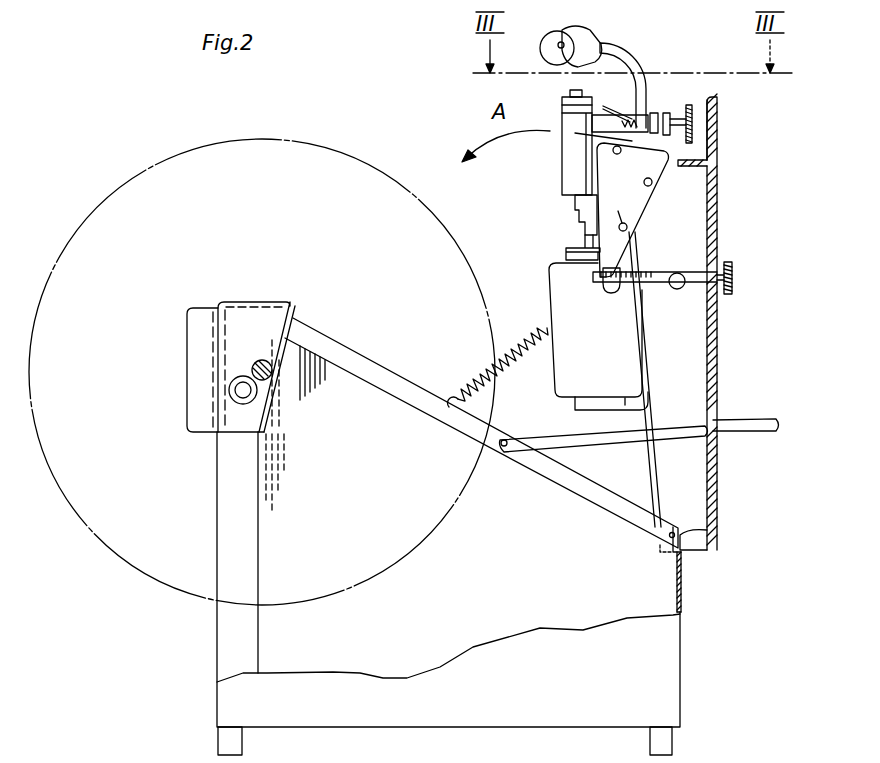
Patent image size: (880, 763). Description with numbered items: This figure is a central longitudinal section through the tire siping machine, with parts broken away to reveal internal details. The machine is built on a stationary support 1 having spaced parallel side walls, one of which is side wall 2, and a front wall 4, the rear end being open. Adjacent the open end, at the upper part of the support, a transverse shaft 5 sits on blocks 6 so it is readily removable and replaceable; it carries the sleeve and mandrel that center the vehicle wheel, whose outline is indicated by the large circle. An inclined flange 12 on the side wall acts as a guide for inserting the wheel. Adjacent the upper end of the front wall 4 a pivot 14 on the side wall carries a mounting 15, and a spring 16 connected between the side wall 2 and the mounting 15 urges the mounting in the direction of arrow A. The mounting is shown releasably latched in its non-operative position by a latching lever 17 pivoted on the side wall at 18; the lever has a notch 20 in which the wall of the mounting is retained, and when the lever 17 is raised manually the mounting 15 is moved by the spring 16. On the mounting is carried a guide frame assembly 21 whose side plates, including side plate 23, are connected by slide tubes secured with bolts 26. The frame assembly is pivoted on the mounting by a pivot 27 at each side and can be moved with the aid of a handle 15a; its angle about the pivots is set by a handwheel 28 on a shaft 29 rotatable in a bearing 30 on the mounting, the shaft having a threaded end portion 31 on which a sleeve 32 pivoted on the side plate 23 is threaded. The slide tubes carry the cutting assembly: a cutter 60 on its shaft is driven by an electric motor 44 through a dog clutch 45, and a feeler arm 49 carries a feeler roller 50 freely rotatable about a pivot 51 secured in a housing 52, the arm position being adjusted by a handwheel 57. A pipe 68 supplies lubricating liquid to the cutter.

The stationary support 1 is at (683, 650).
The side wall 2 is at (683, 576).
The front wall 4 is at (685, 600).
The transverse shaft 5 is at (271, 376).
The blocks 6 is at (270, 408).
The flange 12 is at (202, 318).
The pivot 14 is at (710, 541).
The mounting 15 is at (718, 331).
The handle 15a is at (720, 100).
The spring 16 is at (549, 325).
The latching lever 17 is at (596, 446).
The pivot 18 is at (504, 452).
The notch 20 is at (718, 431).
The guide frame assembly 21 is at (646, 219).
The side plate 23 is at (600, 243).
The bolts 26 is at (612, 151).
The pivot 27 is at (653, 185).
The handwheel 28 is at (735, 279).
The shaft 29 is at (679, 270).
The bearing 30 is at (677, 290).
The threaded end portion 31 is at (630, 292).
The sleeve 32 is at (607, 286).
The electric motor 44 is at (573, 375).
The dog clutch 45 is at (575, 210).
The feeler arm 49 is at (622, 52).
The feeler roller 50 is at (550, 39).
The pivot 51 is at (565, 41).
The housing 52 is at (579, 43).
The handwheel 57 is at (688, 104).
The cutter 60 is at (563, 104).
The pipe 68 is at (621, 108).